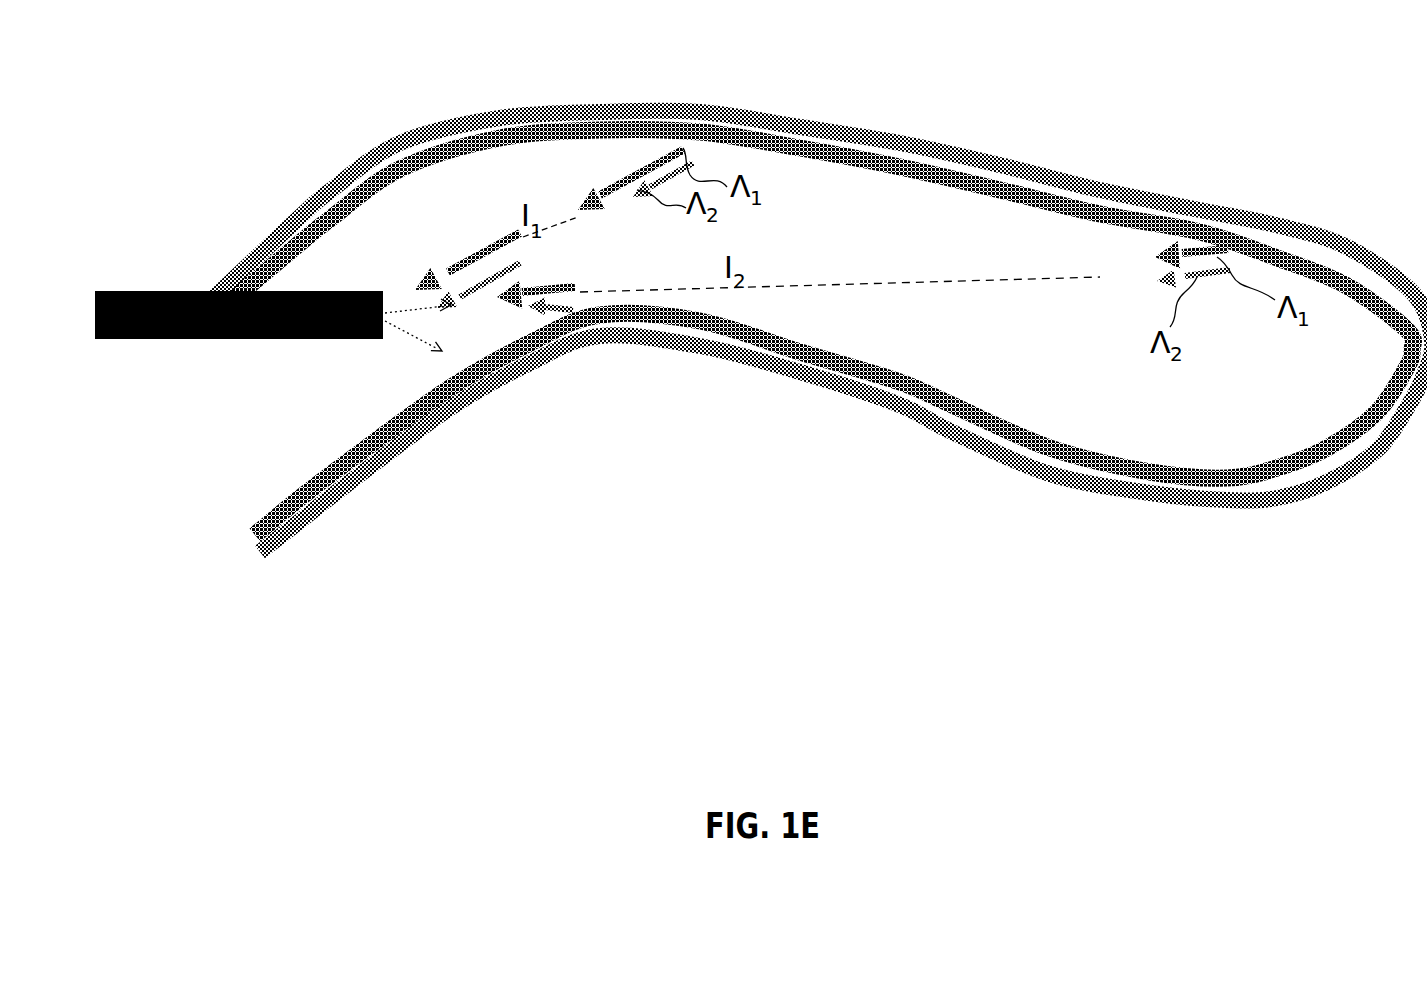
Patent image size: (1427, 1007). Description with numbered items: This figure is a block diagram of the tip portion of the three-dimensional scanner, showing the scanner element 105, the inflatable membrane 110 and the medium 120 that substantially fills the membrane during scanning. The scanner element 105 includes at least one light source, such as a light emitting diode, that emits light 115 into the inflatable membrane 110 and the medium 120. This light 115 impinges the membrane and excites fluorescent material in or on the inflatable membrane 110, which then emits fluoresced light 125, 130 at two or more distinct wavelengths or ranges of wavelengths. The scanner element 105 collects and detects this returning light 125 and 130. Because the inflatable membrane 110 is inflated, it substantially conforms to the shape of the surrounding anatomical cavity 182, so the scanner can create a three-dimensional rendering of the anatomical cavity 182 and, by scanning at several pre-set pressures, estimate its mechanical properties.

The scanner element 105 is at (137, 291).
The inflatable membrane 110 is at (1240, 243).
The light 115 is at (448, 307).
The medium 120 is at (1232, 406).
The light 125 is at (582, 183).
The light 130 is at (550, 283).
The anatomical cavity 182 is at (1075, 181).